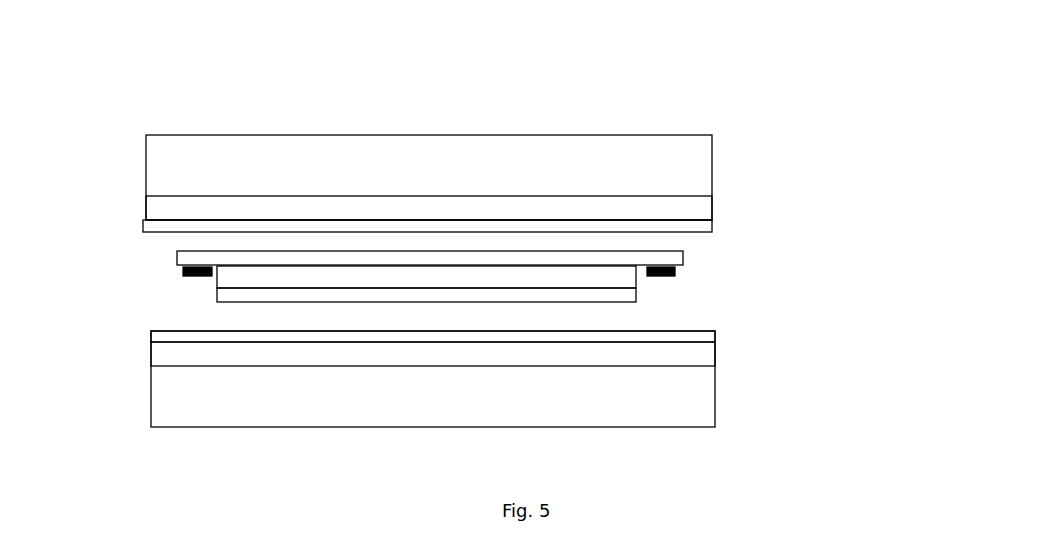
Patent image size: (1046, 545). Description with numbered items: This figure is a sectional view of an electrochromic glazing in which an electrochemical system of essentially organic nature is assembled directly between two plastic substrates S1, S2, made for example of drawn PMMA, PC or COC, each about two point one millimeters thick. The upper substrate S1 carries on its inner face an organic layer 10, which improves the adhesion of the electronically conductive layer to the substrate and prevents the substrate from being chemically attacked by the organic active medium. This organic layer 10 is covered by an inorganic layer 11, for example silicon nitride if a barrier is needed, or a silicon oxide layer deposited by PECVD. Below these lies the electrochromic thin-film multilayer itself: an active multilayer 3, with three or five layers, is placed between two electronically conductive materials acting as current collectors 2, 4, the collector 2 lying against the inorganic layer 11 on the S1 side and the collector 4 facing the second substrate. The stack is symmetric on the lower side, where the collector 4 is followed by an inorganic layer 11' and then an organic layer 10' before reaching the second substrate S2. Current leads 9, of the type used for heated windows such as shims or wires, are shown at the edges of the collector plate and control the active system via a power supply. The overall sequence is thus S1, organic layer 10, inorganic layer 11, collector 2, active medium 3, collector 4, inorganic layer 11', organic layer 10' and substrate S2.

The plastic substrate S1 is at (142, 161).
The organic layer 10 is at (497, 134).
The inorganic layer 11 is at (495, 190).
The current collector 2 is at (590, 257).
The current lead 9 is at (183, 280).
The active multilayer 3 is at (240, 280).
The current collector 4 is at (640, 295).
The plastic substrate S2 is at (683, 407).
The inorganic layer 11' is at (550, 332).
The organic layer 10' is at (542, 359).